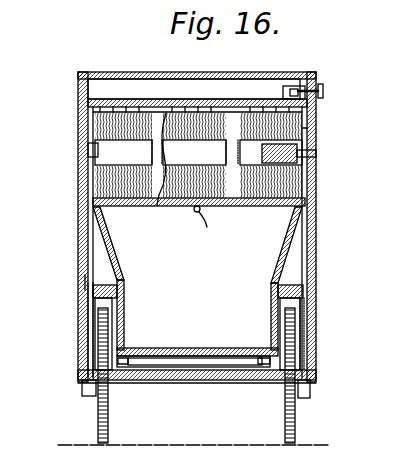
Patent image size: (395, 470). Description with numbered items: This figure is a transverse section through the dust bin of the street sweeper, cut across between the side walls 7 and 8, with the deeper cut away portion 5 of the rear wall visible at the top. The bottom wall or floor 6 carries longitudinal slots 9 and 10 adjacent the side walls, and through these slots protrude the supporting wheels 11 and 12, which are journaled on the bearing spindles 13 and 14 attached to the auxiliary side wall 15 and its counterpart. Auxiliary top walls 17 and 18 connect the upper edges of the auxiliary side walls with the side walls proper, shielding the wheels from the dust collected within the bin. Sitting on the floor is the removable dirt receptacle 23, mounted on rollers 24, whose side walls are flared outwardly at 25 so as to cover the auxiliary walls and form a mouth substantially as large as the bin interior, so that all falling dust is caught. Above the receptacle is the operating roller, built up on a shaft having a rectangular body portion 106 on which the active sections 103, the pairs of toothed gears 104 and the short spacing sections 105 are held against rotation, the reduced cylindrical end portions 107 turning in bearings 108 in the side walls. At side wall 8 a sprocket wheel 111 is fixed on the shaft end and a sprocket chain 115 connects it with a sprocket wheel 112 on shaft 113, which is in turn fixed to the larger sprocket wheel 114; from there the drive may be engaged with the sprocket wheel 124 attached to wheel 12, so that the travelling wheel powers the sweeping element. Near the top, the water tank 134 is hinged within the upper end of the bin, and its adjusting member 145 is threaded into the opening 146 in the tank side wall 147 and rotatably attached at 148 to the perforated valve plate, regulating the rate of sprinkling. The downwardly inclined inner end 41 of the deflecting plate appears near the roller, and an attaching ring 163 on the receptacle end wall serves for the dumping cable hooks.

The water tank 134 is at (132, 84).
The short spacing sections 105 is at (165, 109).
The bearings 108 is at (78, 147).
The active sections 103 is at (194, 152).
The sprocket chain 115 is at (206, 227).
The side wall 7 is at (78, 251).
The side wall 8 is at (317, 224).
The toothed gears 104 is at (157, 207).
The attaching rings 163 is at (212, 228).
The downwardly inclined inner end 41 is at (258, 207).
The reduced cylindrical end portions 107 is at (318, 153).
The rectangular body portion 106 is at (324, 165).
The sprocket wheel 111 is at (348, 134).
The opening 146 is at (317, 103).
The rotatable attachment 148 is at (300, 88).
The side wall of the tank 147 is at (325, 79).
The adjusting member 145 is at (323, 90).
The flared side walls 25 is at (109, 254).
The shaft 113 is at (278, 300).
The removable dirt receptacle 23 is at (197, 311).
The cut away portion 5 is at (267, 334).
The rollers 24 is at (223, 368).
The longitudinal slot 9 is at (112, 380).
The longitudinal slot 10 is at (282, 377).
The bottom wall 6 is at (198, 381).
The bearing spindle 13 is at (160, 383).
The auxiliary side wall 15 is at (124, 326).
The auxiliary top wall 18 is at (292, 298).
The bearing spindle 14 is at (304, 316).
The sprocket wheel 112 is at (310, 346).
The sprocket wheel 114 is at (78, 336).
The wheel 11 is at (87, 370).
The wheel 12 is at (308, 375).
The sprocket wheel 124 is at (322, 392).
The auxiliary top wall 17 is at (69, 281).